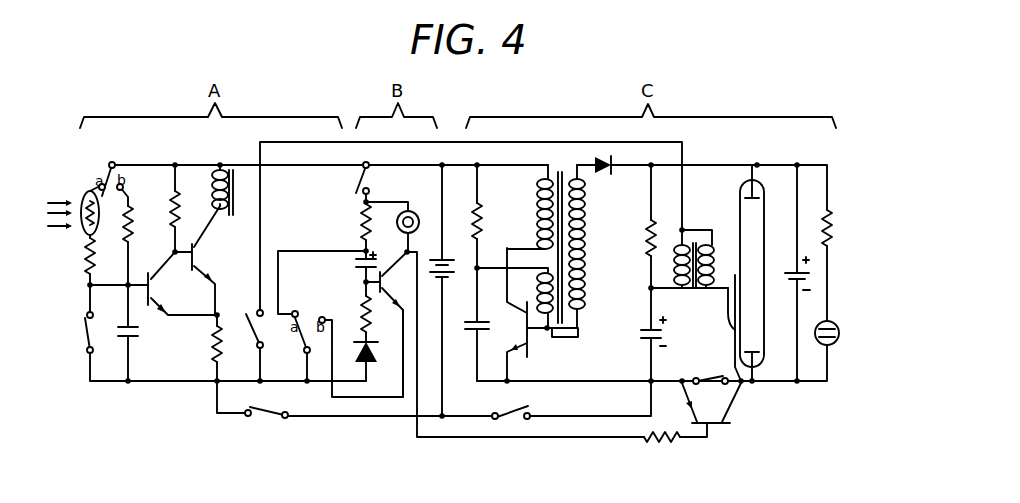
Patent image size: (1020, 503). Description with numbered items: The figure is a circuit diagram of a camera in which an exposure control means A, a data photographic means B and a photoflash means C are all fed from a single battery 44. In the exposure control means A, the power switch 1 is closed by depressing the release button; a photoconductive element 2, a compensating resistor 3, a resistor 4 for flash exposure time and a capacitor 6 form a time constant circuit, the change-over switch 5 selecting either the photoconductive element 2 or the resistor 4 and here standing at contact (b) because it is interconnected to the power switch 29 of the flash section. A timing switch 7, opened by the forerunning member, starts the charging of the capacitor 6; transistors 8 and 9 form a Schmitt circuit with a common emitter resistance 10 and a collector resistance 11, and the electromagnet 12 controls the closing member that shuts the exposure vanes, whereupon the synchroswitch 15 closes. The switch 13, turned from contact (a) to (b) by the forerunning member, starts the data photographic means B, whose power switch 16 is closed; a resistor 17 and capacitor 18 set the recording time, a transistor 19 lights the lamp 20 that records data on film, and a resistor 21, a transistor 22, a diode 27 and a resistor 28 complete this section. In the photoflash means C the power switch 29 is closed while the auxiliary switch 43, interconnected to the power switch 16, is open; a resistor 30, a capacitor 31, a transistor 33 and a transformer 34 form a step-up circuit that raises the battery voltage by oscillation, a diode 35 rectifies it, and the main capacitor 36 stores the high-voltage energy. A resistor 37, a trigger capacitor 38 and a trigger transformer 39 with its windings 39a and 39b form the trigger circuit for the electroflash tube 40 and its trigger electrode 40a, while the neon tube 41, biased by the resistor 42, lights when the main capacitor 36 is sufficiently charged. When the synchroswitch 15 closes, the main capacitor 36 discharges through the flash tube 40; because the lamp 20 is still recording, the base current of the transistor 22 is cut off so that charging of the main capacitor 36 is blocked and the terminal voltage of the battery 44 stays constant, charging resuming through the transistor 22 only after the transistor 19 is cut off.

The power switch 1 is at (266, 426).
The photoconductive element 2 is at (84, 195).
The resistor 3 is at (85, 262).
The resistor 4 is at (131, 226).
The change-over switch 5 is at (108, 164).
The capacitor 6 is at (135, 338).
The timing switch 7 is at (86, 333).
The transistor 8 is at (152, 287).
The transistor 9 is at (198, 256).
The emitter resistance 10 is at (214, 345).
The collector resistance 11 is at (178, 206).
The electromagnet 12 is at (228, 210).
The switch 13 is at (300, 318).
The synchroswitch 15 is at (254, 323).
The power switch 16 is at (372, 190).
The resistor 17 is at (362, 224).
The capacitor 18 is at (362, 268).
The transistor 19 is at (383, 282).
The lamp 20 is at (411, 208).
The resistor 21 is at (657, 441).
The transistor 22 is at (732, 404).
The diode 27 is at (370, 364).
The resistor 28 is at (369, 320).
The power switch 29 is at (529, 407).
The resistor 30 is at (490, 216).
The capacitor 31 is at (462, 332).
The transistor 33 is at (525, 333).
The transformer 34 is at (556, 331).
The diode 35 is at (604, 176).
The main capacitor 36 is at (794, 286).
The resistor 37 is at (647, 248).
The trigger capacitor 38 is at (643, 336).
The trigger transformer 39 is at (690, 229).
The primary winding of trigger transformer 39a is at (684, 291).
The secondary winding of trigger transformer 39b is at (727, 318).
The electro flash tube 40 is at (772, 214).
The trigger electrode 40a is at (736, 359).
The neon tube 41 is at (840, 333).
The resistor 42 is at (831, 217).
The auxiliary switch 43 is at (724, 386).
The battery 44 is at (447, 281).